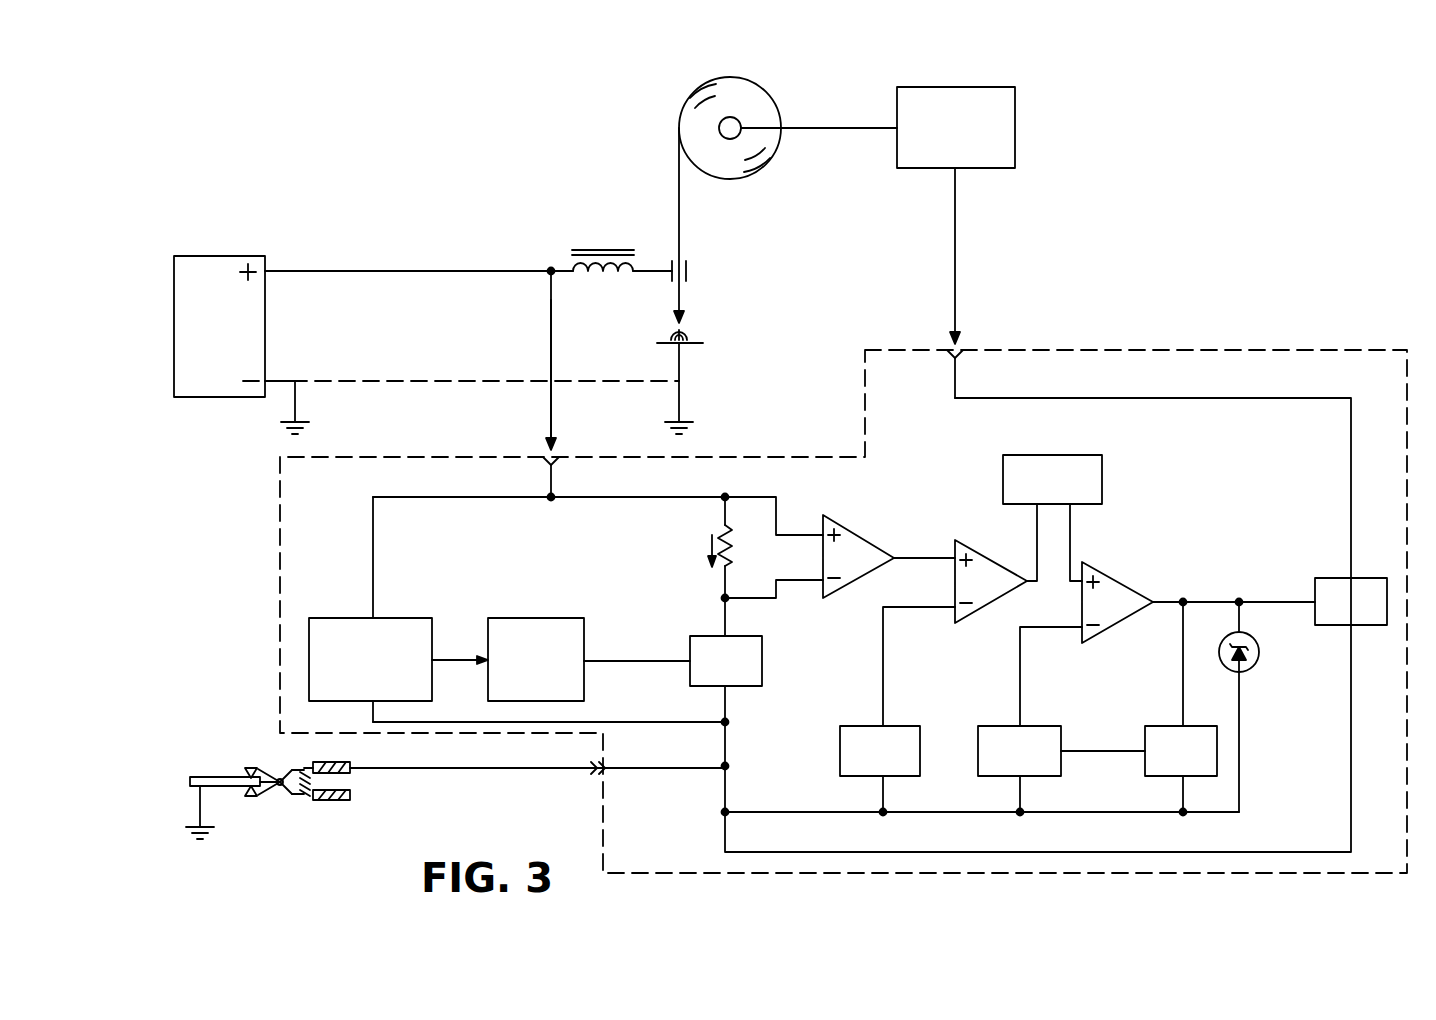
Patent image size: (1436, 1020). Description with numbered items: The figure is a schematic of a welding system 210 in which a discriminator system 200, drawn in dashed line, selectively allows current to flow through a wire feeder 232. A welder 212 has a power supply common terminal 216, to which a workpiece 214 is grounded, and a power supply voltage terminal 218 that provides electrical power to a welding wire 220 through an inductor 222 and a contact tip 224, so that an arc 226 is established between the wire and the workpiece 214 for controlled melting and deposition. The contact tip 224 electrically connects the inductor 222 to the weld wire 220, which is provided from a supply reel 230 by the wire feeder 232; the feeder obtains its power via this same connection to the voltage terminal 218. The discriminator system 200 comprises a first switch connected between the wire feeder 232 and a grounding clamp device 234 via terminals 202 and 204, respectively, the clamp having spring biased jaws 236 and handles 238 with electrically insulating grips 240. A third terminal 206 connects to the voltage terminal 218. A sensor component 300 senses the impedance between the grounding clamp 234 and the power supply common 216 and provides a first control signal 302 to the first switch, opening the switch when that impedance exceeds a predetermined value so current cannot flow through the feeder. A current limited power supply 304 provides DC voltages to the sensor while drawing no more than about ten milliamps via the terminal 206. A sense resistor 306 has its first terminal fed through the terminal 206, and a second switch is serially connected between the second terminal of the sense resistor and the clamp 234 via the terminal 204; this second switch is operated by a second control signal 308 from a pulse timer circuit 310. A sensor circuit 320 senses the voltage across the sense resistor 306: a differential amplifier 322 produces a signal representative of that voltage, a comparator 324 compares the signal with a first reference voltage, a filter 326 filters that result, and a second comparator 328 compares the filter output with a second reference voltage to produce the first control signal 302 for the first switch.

The discriminator system 200 is at (1215, 350).
The terminal 202 is at (970, 338).
The terminal 204 is at (597, 779).
The third terminal 206 is at (541, 449).
The welding system 210 is at (358, 133).
The welder 212 is at (207, 256).
The workpiece 214 is at (692, 345).
The power supply common terminal 216 is at (266, 377).
The power supply voltage terminal 218 is at (272, 263).
The welding wire 220 is at (678, 184).
The inductor 222 is at (590, 247).
The contact tip 224 is at (692, 273).
The arc 226 is at (692, 333).
The supply reel 230 is at (686, 102).
The wire feeder 232 is at (1016, 112).
The grounding clamp device 234 is at (283, 822).
The spring biased jaws 236 is at (252, 798).
The handles 238 is at (352, 802).
The electrically insulating grips 240 is at (322, 801).
The sensor component 300 is at (1166, 485).
The first control signal 302 is at (1247, 598).
The current limited power supply 304 is at (340, 617).
The sense resistor 306 is at (730, 538).
The second control signal 308 is at (622, 660).
The pulse timer circuit 310 is at (533, 617).
The sensor circuit 320 is at (890, 513).
The differential amplifier 322 is at (850, 528).
The comparator 324 is at (978, 614).
The filter 326 is at (1045, 455).
The second comparator 328 is at (1116, 578).